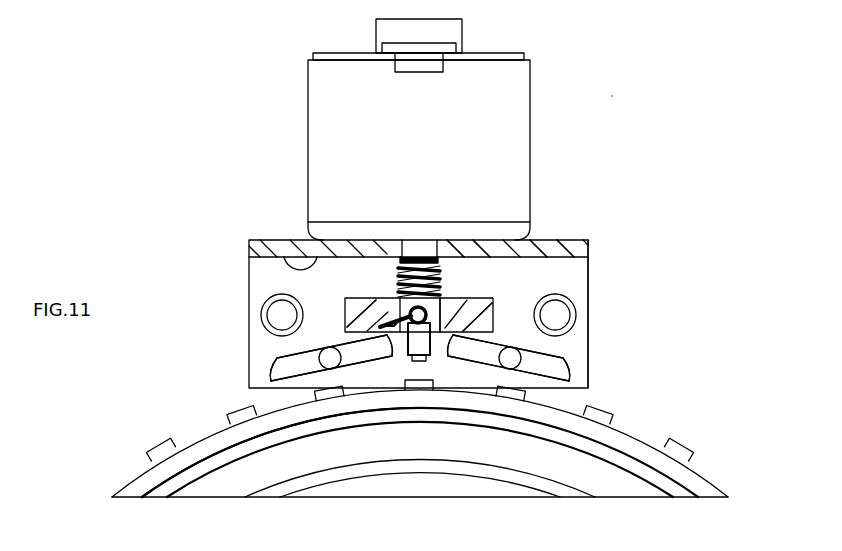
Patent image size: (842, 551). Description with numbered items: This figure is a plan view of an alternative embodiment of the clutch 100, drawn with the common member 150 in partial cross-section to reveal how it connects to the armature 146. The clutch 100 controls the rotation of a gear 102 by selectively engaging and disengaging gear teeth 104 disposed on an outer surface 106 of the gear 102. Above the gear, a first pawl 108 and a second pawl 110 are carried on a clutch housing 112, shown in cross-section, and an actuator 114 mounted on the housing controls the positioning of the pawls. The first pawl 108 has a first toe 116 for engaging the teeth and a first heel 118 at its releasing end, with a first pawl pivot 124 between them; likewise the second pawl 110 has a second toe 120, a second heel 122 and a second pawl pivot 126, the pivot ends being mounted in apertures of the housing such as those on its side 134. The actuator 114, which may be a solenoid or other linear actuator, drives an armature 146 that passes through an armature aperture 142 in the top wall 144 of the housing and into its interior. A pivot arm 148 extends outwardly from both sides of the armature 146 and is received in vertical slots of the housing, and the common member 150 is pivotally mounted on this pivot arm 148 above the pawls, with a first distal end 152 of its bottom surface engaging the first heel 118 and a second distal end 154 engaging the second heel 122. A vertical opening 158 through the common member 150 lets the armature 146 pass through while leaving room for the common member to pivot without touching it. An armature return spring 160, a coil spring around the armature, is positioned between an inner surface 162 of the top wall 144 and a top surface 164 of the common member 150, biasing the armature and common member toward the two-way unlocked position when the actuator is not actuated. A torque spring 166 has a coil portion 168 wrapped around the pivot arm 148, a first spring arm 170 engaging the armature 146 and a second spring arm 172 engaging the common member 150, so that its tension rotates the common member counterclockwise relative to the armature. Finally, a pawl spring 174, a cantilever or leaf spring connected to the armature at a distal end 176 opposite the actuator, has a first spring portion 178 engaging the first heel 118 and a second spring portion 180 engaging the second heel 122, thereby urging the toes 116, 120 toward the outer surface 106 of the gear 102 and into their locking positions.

The clutch 100 is at (612, 96).
The gear 102 is at (630, 497).
The gear teeth 104 is at (698, 452).
The outer surface 106 is at (192, 443).
The first pawl 108 is at (263, 362).
The second pawl 110 is at (574, 362).
The clutch housing 112 is at (250, 241).
The actuator 114 is at (531, 80).
The first toe 116 is at (260, 381).
The first heel 118 is at (343, 340).
The second toe 120 is at (580, 381).
The second heel 122 is at (497, 340).
The first pawl pivot 124 is at (322, 351).
The second pawl pivot 126 is at (518, 351).
The side 134 is at (588, 263).
The armature aperture 142 is at (453, 248).
The top wall 144 is at (547, 239).
The armature 146 is at (425, 248).
The pivot arm 148 is at (440, 310).
The common member 150 is at (343, 298).
The first distal end 152 is at (345, 328).
The second distal end 154 is at (493, 332).
The vertical opening 158 is at (398, 305).
The armature return spring 160 is at (395, 272).
The inner surface 162 is at (283, 256).
The top surface 164 is at (478, 298).
The torque spring 166 is at (405, 352).
The coil portion 168 is at (437, 298).
The first spring arm 170 is at (449, 340).
The second spring arm 172 is at (388, 340).
The pawl spring 174 is at (433, 345).
The distal end 176 is at (419, 362).
The first spring portion 178 is at (363, 362).
The second spring portion 180 is at (478, 362).